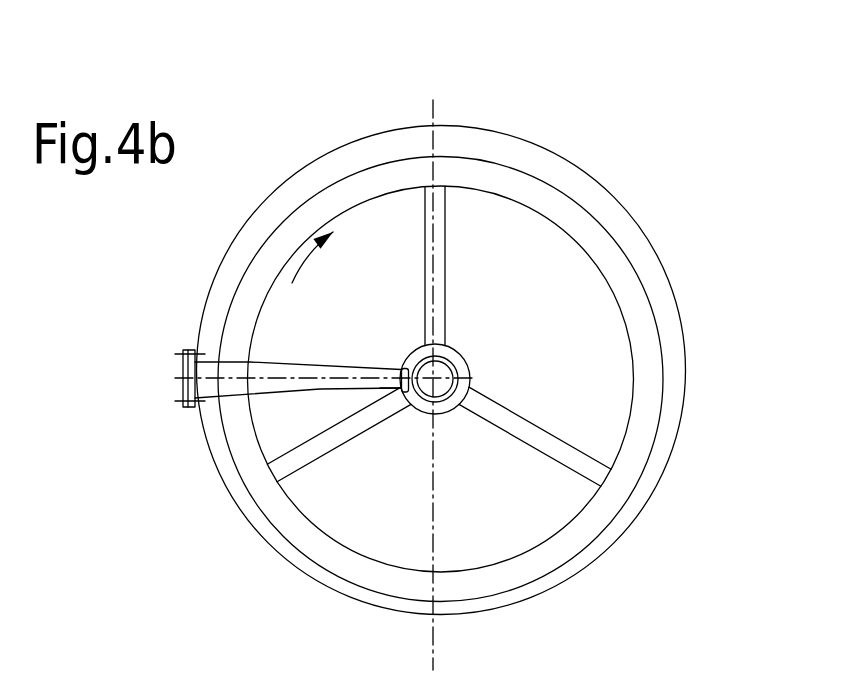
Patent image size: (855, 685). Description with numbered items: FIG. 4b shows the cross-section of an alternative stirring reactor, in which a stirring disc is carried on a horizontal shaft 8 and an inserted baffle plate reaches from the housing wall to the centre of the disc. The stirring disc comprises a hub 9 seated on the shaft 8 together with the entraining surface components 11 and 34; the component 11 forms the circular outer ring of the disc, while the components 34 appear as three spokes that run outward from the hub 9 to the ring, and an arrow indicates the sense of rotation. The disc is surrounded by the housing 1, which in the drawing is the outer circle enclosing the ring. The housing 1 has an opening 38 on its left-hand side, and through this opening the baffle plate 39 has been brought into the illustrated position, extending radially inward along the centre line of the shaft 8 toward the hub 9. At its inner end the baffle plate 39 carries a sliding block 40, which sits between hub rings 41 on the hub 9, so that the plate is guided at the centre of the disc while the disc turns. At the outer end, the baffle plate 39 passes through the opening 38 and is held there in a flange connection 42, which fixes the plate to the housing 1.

The housing 1 is at (205, 292).
The shaft 8 is at (470, 382).
The hub 9 is at (455, 362).
The entraining surface component 11 is at (500, 174).
The entraining surface component 34 is at (445, 282).
The opening 38 is at (182, 375).
The baffle plate 39 is at (248, 362).
The sliding block 40 is at (393, 388).
The hub rings 41 is at (465, 365).
The flange connection 42 is at (190, 398).